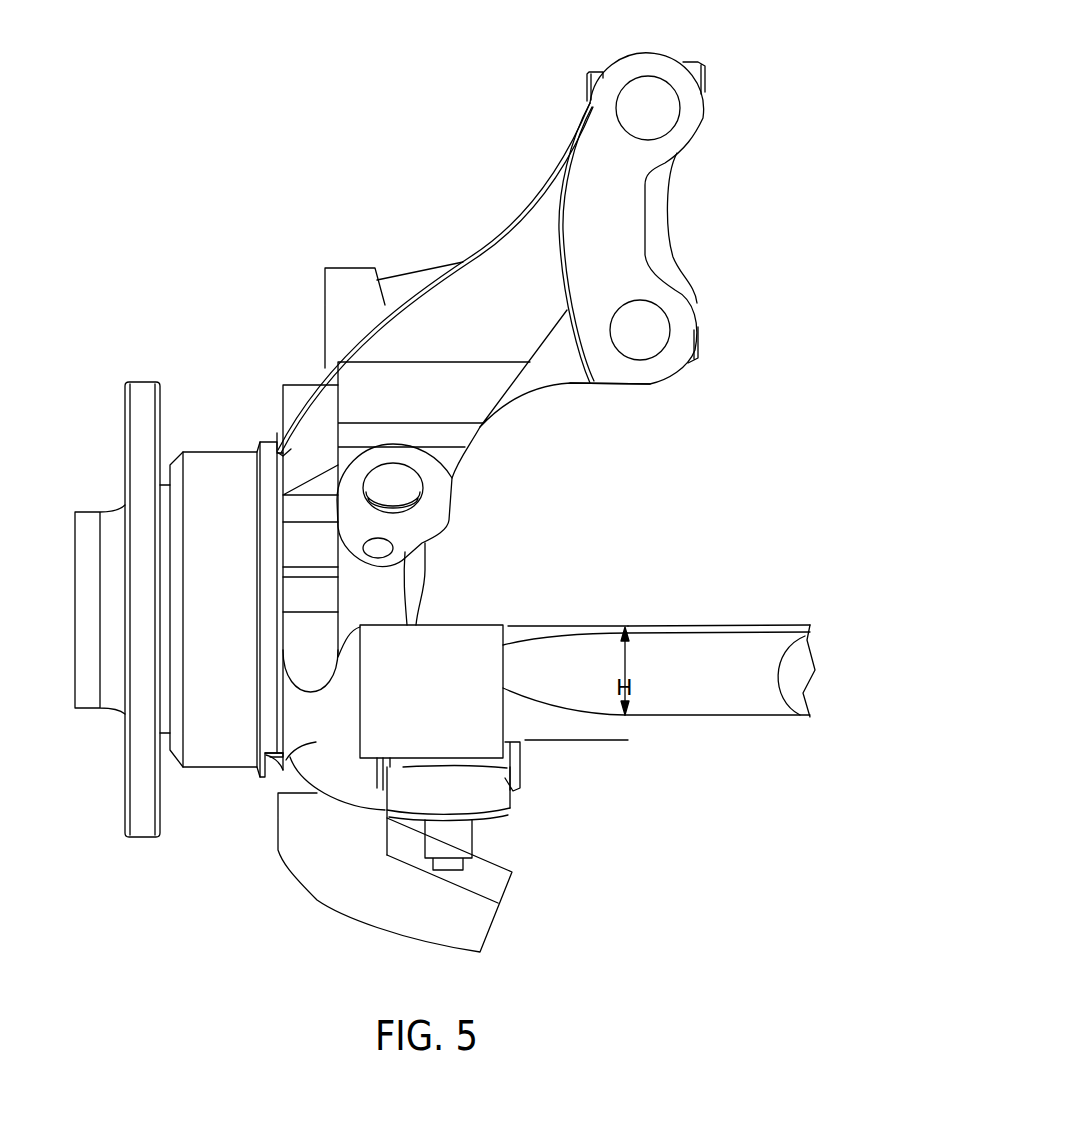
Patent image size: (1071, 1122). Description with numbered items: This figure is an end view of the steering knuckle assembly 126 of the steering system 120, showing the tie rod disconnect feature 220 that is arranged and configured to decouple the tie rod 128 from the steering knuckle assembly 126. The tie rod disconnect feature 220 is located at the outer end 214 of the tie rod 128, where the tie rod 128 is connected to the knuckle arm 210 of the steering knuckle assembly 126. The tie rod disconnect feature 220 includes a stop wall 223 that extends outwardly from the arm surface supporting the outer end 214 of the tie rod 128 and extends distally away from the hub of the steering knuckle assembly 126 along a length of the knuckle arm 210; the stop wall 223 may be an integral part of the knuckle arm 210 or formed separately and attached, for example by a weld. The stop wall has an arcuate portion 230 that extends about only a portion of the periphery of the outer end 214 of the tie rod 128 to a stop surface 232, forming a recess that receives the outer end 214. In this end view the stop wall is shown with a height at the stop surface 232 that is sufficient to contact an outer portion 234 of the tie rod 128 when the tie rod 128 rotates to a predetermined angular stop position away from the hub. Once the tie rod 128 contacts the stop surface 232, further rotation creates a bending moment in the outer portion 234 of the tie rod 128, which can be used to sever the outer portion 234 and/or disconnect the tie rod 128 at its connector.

The steering system 120 is at (318, 190).
The steering knuckle assembly 126 is at (298, 351).
The tie rod 128 is at (702, 642).
The knuckle arm 210 is at (288, 758).
The outer end 214 is at (541, 697).
The tie rod disconnect feature 220 is at (475, 692).
The stop wall 223 is at (443, 628).
The arcuate portion 230 is at (403, 762).
The stop surface 232 is at (505, 665).
The outer portion 234 is at (667, 680).